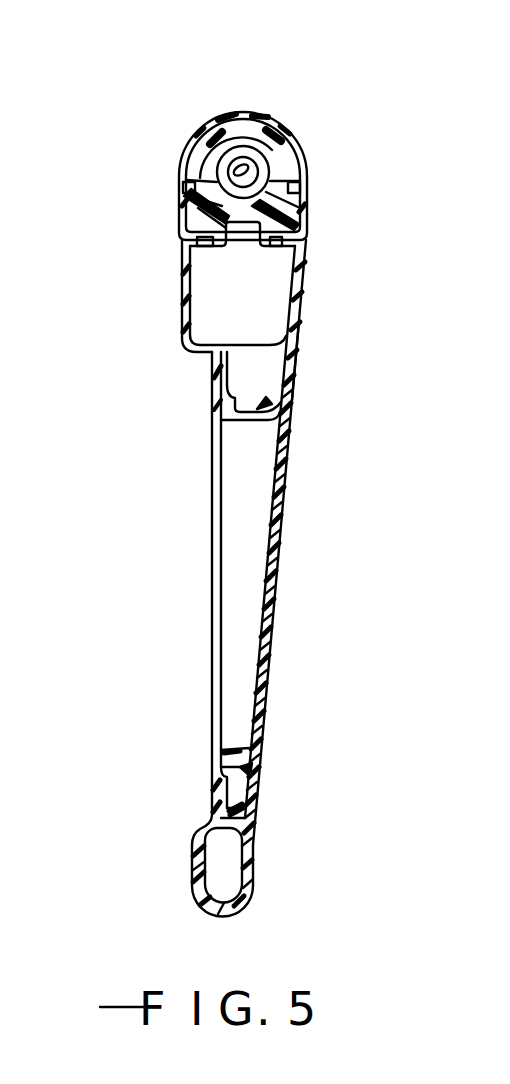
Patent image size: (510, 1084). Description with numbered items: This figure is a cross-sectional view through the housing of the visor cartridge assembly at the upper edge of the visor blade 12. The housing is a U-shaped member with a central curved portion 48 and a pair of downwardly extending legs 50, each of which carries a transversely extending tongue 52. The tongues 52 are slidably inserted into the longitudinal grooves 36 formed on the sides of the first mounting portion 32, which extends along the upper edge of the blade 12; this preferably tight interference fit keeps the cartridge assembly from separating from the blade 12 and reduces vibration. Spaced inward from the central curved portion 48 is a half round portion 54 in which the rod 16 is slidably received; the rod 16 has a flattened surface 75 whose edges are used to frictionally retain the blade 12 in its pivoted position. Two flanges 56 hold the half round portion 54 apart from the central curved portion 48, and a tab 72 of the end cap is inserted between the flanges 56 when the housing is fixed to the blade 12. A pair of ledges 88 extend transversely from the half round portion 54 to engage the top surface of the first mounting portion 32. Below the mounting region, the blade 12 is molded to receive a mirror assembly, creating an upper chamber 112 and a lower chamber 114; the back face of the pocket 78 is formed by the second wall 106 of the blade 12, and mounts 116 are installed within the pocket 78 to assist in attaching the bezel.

The visor blade 12 is at (290, 348).
The rod 16 is at (248, 148).
The first mounting portion 32 is at (307, 198).
The grooves 36 is at (232, 252).
The central curved portion 48 is at (236, 111).
The legs 50 is at (187, 197).
The tongues 52 is at (186, 238).
The half round portion 54 is at (262, 152).
The flanges 56 is at (187, 150).
The tab 72 is at (216, 198).
The flattened surface 75 is at (268, 170).
The pocket 78 is at (192, 562).
The ledges 88 is at (192, 182).
The second wall 106 is at (273, 602).
The upper chamber 112 is at (262, 323).
The lower chamber 114 is at (230, 853).
The mounts 116 is at (268, 403).